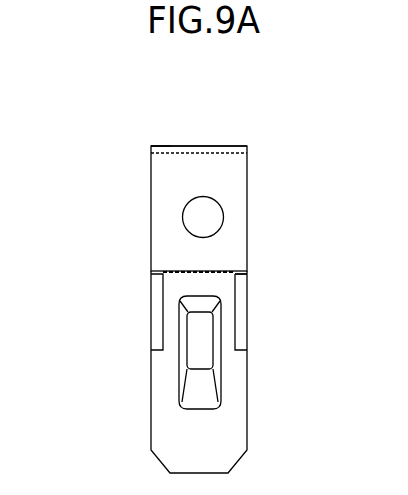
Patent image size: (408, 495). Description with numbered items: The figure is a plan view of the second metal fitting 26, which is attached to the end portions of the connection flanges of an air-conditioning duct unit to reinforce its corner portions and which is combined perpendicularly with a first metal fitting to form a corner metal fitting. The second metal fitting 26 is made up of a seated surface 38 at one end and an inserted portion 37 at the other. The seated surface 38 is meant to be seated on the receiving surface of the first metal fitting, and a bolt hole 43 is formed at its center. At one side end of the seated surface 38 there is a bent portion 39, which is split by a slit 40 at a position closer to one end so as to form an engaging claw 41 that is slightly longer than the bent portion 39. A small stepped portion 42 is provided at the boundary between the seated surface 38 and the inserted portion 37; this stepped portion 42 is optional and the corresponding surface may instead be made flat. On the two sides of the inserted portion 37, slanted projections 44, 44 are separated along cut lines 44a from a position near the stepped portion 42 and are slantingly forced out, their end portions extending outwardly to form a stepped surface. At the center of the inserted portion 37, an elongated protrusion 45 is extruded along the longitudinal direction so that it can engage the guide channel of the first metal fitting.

The second metal fitting 26 is at (142, 172).
The inserted portion 37 is at (151, 373).
The seated surface 38 is at (240, 212).
The bent portion 39 is at (218, 145).
The slit 40 is at (168, 153).
The engaging claw 41 is at (162, 145).
The stepped portion 42 is at (200, 278).
The bolt hole 43 is at (213, 218).
The slanted projection 44 is at (160, 315).
The cut line 44a is at (248, 277).
The elongated protrusion 45 is at (191, 354).